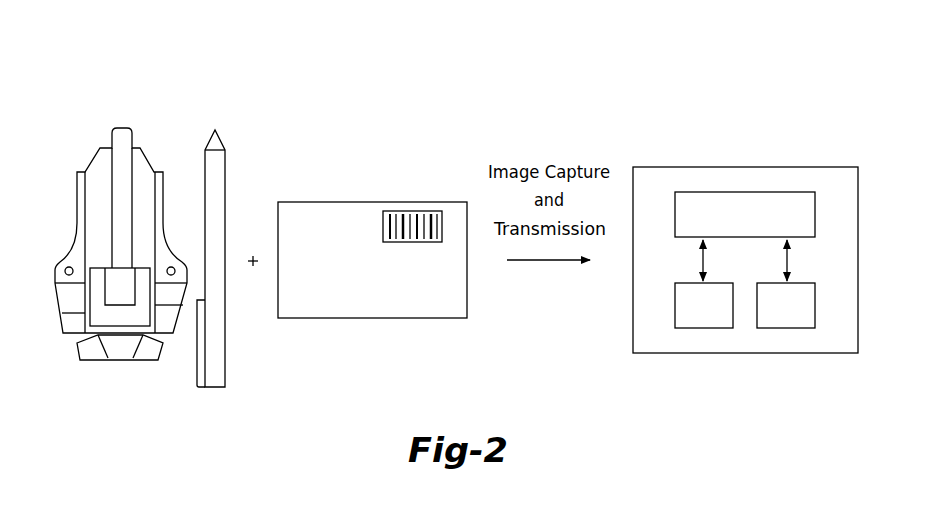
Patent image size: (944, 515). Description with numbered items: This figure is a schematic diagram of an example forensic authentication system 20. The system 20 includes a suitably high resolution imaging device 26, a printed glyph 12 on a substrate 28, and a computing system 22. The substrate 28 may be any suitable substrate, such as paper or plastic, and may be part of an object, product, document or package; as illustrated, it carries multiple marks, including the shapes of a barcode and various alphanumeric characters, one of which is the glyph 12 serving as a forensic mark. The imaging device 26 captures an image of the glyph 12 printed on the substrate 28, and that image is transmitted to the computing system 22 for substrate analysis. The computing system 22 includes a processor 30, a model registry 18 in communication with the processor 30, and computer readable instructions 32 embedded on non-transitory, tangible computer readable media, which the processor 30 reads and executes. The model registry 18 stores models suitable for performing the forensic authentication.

The forensic authentication system 20 is at (82, 68).
The imaging device 26 is at (160, 145).
The substrate 28 is at (332, 201).
The printed glyph 12 is at (348, 319).
The computing system 22 is at (797, 142).
The processor 30 is at (757, 223).
The computer readable instructions 32 is at (716, 318).
The model registry 18 is at (798, 318).